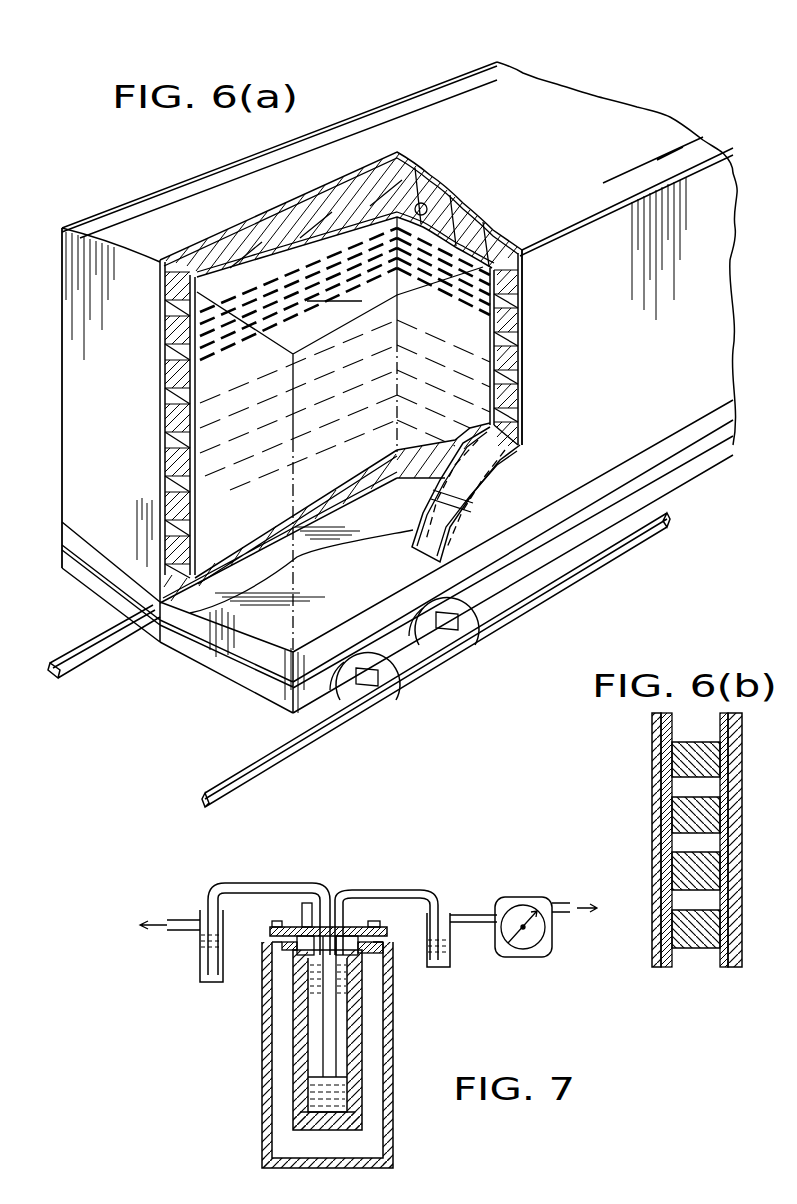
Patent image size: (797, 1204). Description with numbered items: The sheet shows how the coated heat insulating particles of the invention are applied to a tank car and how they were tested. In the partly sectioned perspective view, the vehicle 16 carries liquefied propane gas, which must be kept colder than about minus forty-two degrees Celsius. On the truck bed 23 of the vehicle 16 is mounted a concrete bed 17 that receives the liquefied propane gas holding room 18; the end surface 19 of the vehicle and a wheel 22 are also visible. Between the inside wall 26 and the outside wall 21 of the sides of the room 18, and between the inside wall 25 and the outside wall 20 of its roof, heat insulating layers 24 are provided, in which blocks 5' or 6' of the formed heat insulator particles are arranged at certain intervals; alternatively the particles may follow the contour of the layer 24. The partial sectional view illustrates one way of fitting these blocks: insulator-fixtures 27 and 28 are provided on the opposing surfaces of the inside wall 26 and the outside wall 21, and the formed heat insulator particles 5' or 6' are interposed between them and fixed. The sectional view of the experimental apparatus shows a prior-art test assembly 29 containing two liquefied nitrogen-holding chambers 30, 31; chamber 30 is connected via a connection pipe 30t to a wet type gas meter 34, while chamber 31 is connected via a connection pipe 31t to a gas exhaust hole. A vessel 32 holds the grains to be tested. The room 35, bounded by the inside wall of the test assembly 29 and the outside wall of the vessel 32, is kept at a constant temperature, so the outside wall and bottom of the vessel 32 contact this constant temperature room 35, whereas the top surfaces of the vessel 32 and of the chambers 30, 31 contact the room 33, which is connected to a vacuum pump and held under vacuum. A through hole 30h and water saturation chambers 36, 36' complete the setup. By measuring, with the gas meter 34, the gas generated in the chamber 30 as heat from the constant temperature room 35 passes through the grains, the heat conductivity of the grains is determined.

In FIG. 6a, the vehicle 16 is at (53, 249).
In FIG. 6a, the concrete bed 17 is at (250, 535).
In FIG. 6a, the LPG holding room 18 is at (477, 402).
In FIG. 6a, the end surface 19 is at (82, 378).
In FIG. 6a, the outside wall 20 is at (272, 157).
In FIG. 6a, the outside wall 21 is at (347, 180).
In FIG. 6b, the outside wall 21 is at (742, 770).
In FIG. 6a, the wheel 22 is at (363, 690).
In FIG. 6a, the truck bed 23 is at (226, 665).
In FIG. 6a, the heat insulating layer 24 is at (163, 433).
In FIG. 6a, the inside wall 25 is at (430, 205).
In FIG. 6a, the inside wall 26 is at (489, 323).
In FIG. 6b, the inside wall 26 is at (660, 805).
In FIG. 6b, the insulator-fixture 27 is at (765, 835).
In FIG. 6b, the insulator-fixture 28 is at (667, 847).
In FIG. 6a, the block of heat insulator particles 5' is at (347, 426).
In FIG. 6b, the block of heat insulator particles 5' is at (651, 845).
In FIG. 6a, the block of heat insulator particles 6' is at (347, 426).
In FIG. 6b, the block of heat insulator particles 6' is at (651, 845).
In FIG. 7, the test assembly 29 is at (393, 1117).
In FIG. 7, the liquefied nitrogen-holding chamber 30 is at (347, 1034).
In FIG. 7, the through hole 30h is at (284, 951).
In FIG. 7, the connection pipe 30t is at (393, 888).
In FIG. 7, the liquefied nitrogen-holding chamber 31 is at (312, 1097).
In FIG. 7, the connection pipe 31t is at (247, 884).
In FIG. 7, the vessel 32 is at (330, 1112).
In FIG. 7, the vacuum chamber 33 is at (300, 938).
In FIG. 7, the wet type gas meter 34 is at (533, 955).
In FIG. 7, the constant temperature room 35 is at (283, 1060).
In FIG. 7, the water saturation chamber 36 is at (176, 950).
In FIG. 7, the water saturation chamber 36' is at (462, 955).